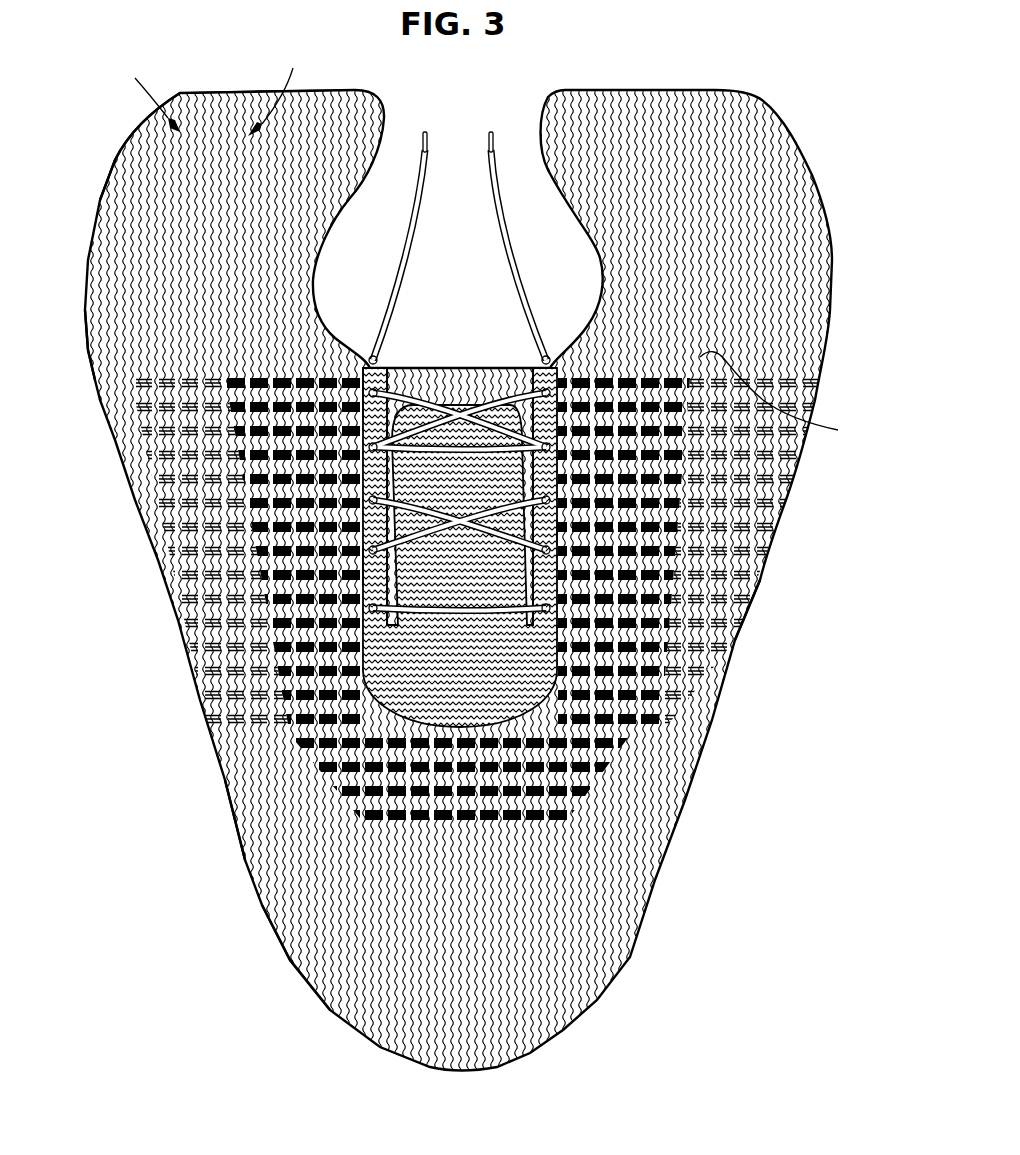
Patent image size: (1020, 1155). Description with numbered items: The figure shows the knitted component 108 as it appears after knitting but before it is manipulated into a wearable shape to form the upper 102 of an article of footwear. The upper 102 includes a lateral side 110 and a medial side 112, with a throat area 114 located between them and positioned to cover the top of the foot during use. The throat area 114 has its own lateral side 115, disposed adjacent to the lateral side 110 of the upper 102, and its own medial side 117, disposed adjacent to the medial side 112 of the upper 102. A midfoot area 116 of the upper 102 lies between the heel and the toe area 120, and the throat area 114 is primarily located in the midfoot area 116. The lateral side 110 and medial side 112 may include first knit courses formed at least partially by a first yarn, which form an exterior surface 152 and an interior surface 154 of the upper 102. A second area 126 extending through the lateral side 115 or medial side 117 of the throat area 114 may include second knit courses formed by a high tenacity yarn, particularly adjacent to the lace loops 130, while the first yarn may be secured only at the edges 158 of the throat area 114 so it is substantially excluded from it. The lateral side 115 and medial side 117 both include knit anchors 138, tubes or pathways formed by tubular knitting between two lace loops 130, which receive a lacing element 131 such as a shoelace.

The upper 102 is at (140, 181).
The knitted component 108 is at (250, 828).
The lateral side 110 is at (812, 358).
The medial side 112 is at (100, 338).
The throat area 114 is at (457, 403).
The lateral side of the throat area 115 is at (538, 372).
The midfoot area 116 is at (748, 580).
The medial side of the throat area 117 is at (382, 372).
The toe area 120 is at (305, 918).
The second area 126 is at (790, 398).
The lace loops 130 is at (368, 358).
The lacing element 131 is at (490, 190).
The knit anchors 138 is at (358, 567).
The exterior surface 152 is at (175, 95).
The interior surface 154 is at (301, 89).
The edges 158 is at (560, 533).